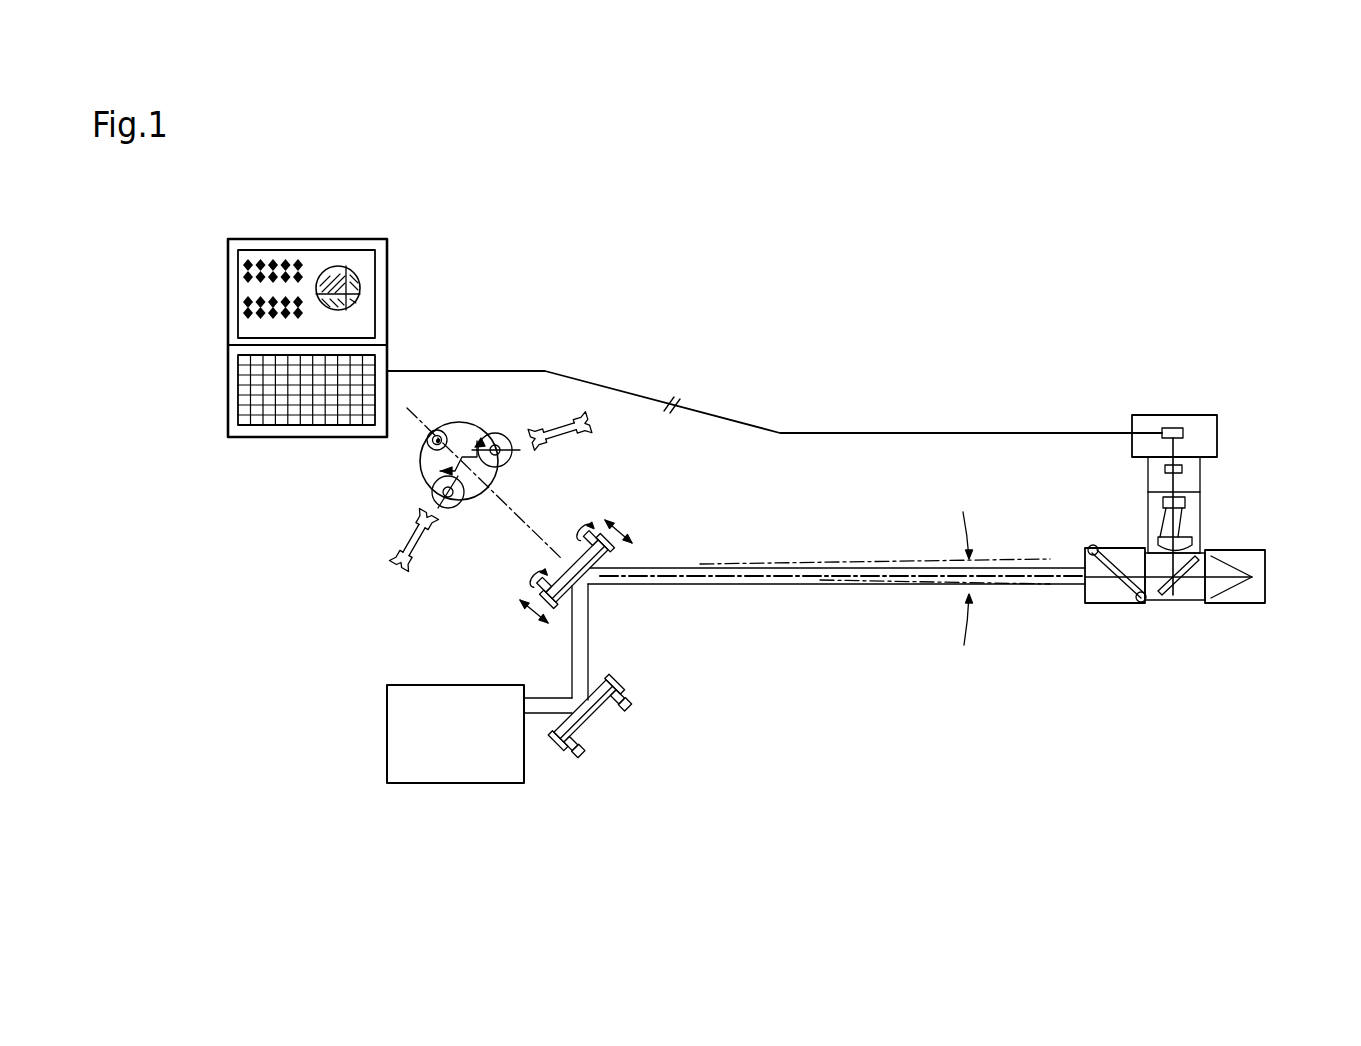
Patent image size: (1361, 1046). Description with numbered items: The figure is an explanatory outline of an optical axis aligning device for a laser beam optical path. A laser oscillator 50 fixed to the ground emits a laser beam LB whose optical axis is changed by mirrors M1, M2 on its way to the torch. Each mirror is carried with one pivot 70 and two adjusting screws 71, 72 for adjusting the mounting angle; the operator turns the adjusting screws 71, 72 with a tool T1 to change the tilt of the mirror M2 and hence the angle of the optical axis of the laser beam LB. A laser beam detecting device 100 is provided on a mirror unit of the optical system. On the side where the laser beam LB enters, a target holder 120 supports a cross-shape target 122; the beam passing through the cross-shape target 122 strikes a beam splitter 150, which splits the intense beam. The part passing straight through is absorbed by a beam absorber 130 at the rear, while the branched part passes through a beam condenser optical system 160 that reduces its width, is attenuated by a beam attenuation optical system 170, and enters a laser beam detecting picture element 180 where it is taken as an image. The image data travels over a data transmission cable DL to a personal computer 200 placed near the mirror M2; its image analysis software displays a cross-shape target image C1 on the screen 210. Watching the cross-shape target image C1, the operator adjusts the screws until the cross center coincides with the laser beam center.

The personal computer 200 is at (402, 248).
The screen 210 is at (316, 265).
The cross-shape target image C1 is at (333, 278).
The data transmission cable DL is at (902, 432).
The laser beam detecting device 100 is at (1178, 398).
The laser beam detecting picture element 180 is at (1183, 433).
The beam attenuation optical system 170 is at (1182, 470).
The beam condenser optical system 160 is at (1185, 502).
The beam splitter 150 is at (1182, 600).
The beam absorber 130 is at (1258, 598).
The target holder 120 is at (1095, 596).
The cross-shape target 122 is at (1118, 597).
The pivot 70 is at (420, 448).
The adjusting screw 71 is at (432, 496).
The adjusting screw 72 is at (493, 434).
The tool T1 is at (591, 429).
The mirror M1 is at (590, 722).
The mirror M2 is at (590, 596).
The laser oscillator 50 is at (437, 775).
The laser beam LB is at (862, 585).